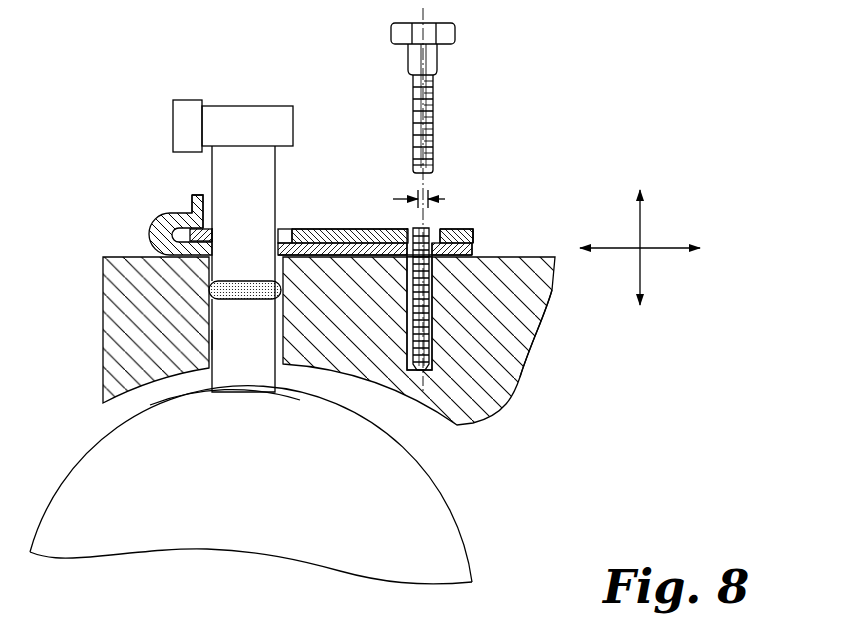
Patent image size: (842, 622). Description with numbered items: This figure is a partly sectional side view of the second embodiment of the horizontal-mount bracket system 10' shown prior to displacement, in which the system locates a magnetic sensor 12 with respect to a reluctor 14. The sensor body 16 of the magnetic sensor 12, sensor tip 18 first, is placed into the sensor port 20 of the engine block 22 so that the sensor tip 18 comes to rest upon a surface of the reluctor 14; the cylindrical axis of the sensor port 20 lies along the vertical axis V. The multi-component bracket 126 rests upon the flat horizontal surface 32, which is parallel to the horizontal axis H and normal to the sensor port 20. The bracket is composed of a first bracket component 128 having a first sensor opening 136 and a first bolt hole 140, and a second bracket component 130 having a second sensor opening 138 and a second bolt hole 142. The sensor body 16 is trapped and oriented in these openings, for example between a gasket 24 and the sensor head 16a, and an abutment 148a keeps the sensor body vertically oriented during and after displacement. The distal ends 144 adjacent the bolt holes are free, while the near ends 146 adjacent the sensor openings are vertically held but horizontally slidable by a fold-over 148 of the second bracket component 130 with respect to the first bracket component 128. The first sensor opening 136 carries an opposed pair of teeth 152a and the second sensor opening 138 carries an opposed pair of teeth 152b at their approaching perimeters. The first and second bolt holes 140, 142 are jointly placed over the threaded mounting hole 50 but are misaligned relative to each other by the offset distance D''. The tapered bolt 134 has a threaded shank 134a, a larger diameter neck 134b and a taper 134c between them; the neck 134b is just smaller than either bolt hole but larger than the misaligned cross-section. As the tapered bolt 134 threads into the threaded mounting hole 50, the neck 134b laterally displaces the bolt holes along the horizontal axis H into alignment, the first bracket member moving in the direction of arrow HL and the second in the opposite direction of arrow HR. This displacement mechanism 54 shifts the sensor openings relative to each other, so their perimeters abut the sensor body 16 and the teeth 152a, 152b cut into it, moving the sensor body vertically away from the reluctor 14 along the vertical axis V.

The horizontal-mount bracket system 10' is at (375, 158).
The magnetic sensor 12 is at (266, 220).
The reluctor 14 is at (452, 513).
The sensor body 16 is at (278, 176).
The sensor head 16a is at (263, 106).
The sensor tip 18 is at (212, 395).
The sensor port 20 is at (210, 340).
The engine block 22 is at (522, 377).
The gasket 24 is at (212, 290).
The horizontal surface 32 is at (108, 255).
The threaded mounting hole 50 is at (432, 312).
The displacement mechanism 54 is at (438, 165).
The multi-component bracket 126 is at (342, 220).
The first bracket component 128 is at (356, 228).
The second bracket component 130 is at (409, 175).
The tapered bolt 134 is at (426, 115).
The threaded shank 134a is at (433, 120).
The neck 134b is at (407, 57).
The taper 134c is at (437, 75).
The first sensor opening 136 is at (212, 195).
The second sensor opening 138 is at (275, 295).
The first bolt hole 140 is at (418, 227).
The second bolt hole 142 is at (417, 253).
The distal ends 144 is at (452, 227).
The near ends 146 is at (178, 205).
The fold-over 148 is at (153, 232).
The abutment 148a is at (198, 193).
The teeth 152a is at (283, 240).
The teeth 152b is at (215, 237).
The offset distance D'' is at (433, 199).
The arrow HL is at (473, 235).
The arrow HR is at (478, 250).
The vertical axis V is at (641, 215).
The horizontal axis H is at (657, 250).